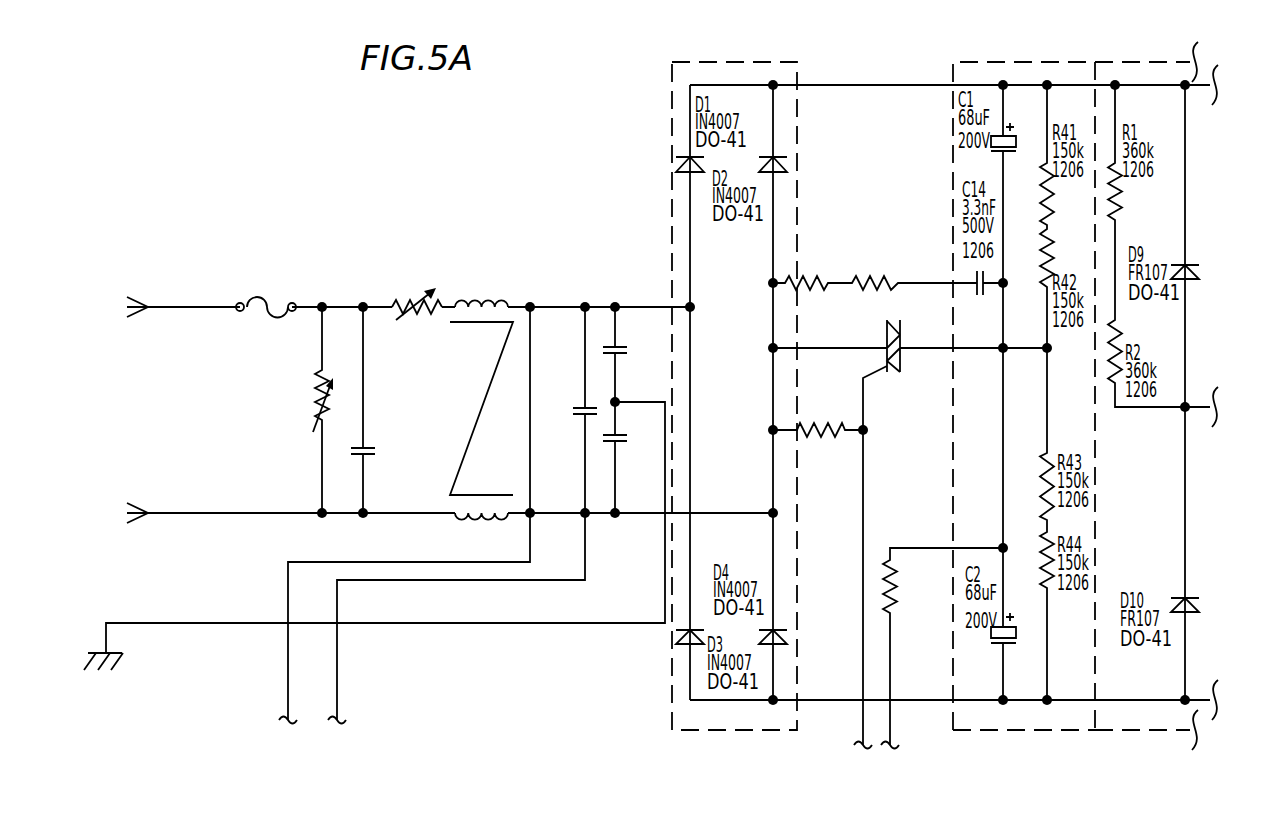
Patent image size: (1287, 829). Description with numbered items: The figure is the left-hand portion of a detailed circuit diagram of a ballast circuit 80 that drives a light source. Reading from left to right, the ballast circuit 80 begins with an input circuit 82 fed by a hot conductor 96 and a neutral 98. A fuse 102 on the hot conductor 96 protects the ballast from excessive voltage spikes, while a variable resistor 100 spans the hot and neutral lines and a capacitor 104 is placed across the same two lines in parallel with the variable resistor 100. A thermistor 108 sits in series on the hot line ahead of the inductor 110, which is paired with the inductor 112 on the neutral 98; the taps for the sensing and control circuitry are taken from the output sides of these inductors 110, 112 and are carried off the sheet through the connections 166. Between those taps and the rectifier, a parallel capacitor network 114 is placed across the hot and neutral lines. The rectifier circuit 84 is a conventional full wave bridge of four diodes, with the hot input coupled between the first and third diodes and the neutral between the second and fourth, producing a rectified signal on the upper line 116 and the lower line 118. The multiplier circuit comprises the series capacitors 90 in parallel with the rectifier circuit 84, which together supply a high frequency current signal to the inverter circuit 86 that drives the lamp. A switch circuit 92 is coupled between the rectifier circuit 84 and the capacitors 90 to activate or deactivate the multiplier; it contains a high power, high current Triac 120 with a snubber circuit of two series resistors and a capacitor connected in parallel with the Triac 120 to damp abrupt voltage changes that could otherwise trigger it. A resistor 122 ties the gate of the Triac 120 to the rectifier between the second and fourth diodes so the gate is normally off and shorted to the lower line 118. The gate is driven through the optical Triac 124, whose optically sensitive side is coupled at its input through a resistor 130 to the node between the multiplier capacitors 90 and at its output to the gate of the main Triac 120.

The ballast circuit 80 is at (356, 113).
The input circuit 82 is at (450, 193).
The rectifier circuit 84 is at (664, 100).
The inverter circuit 86 is at (1163, 61).
The series capacitors C1 and C2 90 is at (1032, 56).
The switch circuit 92 is at (866, 158).
The hot conductor 96 is at (174, 305).
The neutral 98 is at (200, 514).
The variable resistor 100 is at (322, 338).
The fuse 102 is at (270, 309).
The capacitor 104 is at (369, 456).
The NTC thermistor 108 is at (396, 302).
The inductor 110 is at (514, 303).
The inductor 112 is at (455, 516).
The parallel capacitor network 114 is at (602, 305).
The upper line 116 is at (808, 85).
The lower line 118 is at (818, 700).
The Triac 120 is at (898, 322).
The resistor R30 122 is at (856, 424).
The optical Triac 124 is at (878, 771).
The resistor R17 130 is at (890, 560).
The connection to FIG. 5C 166 is at (427, 539).